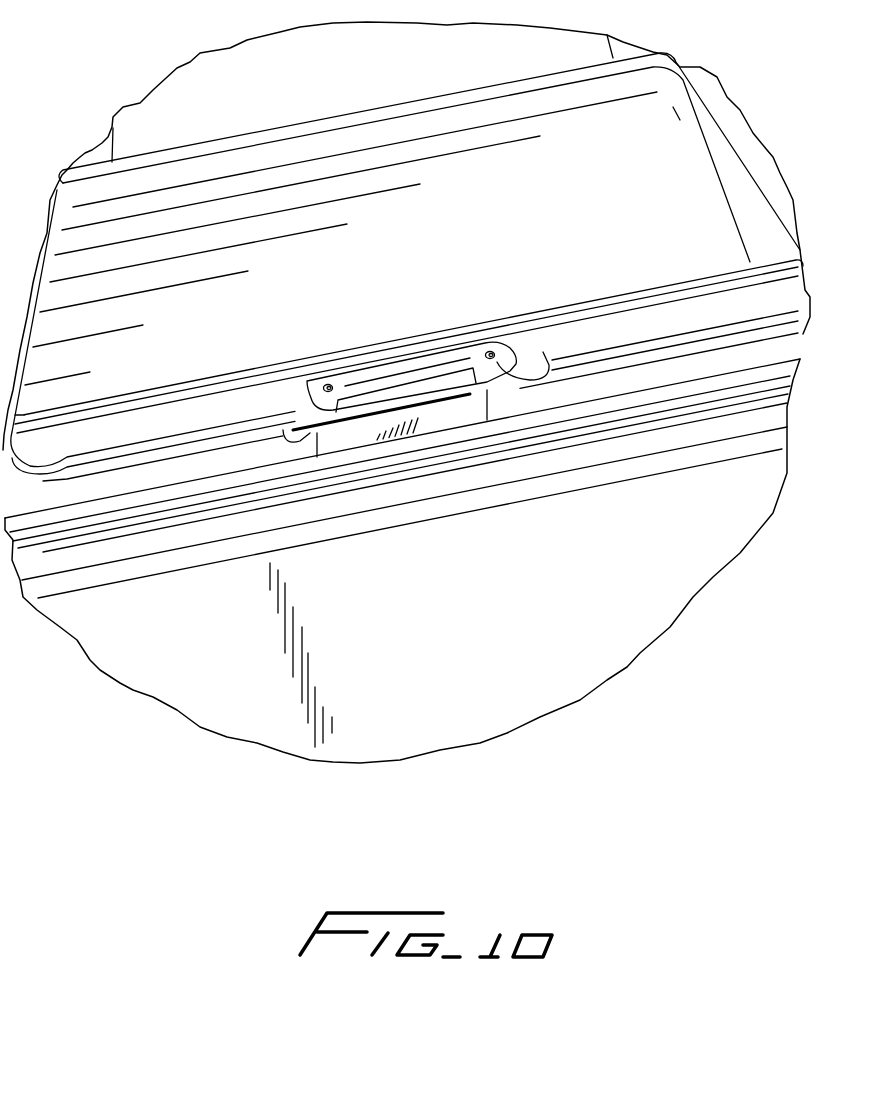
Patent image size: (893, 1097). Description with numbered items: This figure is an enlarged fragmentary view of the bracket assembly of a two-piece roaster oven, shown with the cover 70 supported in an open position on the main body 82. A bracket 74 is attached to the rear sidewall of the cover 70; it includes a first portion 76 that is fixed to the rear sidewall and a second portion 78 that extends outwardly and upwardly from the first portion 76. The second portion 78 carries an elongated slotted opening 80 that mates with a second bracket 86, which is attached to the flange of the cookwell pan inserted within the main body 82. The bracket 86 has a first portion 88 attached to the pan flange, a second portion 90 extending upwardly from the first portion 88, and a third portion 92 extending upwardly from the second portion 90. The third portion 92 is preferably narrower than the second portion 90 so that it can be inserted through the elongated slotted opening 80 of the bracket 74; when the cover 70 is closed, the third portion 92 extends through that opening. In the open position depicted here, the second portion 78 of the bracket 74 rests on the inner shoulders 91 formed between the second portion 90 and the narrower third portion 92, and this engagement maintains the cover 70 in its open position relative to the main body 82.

The cover 70 is at (510, 204).
The main body 82 is at (423, 676).
The bracket 74 is at (367, 368).
The first portion 76 is at (510, 348).
The second portion 78 is at (540, 378).
The elongated slotted opening 80 is at (315, 393).
The bracket 86 is at (458, 413).
The first portion 88 is at (383, 443).
The second portion 90 is at (337, 435).
The inner shoulders 91 is at (292, 440).
The third portion 92 is at (423, 385).